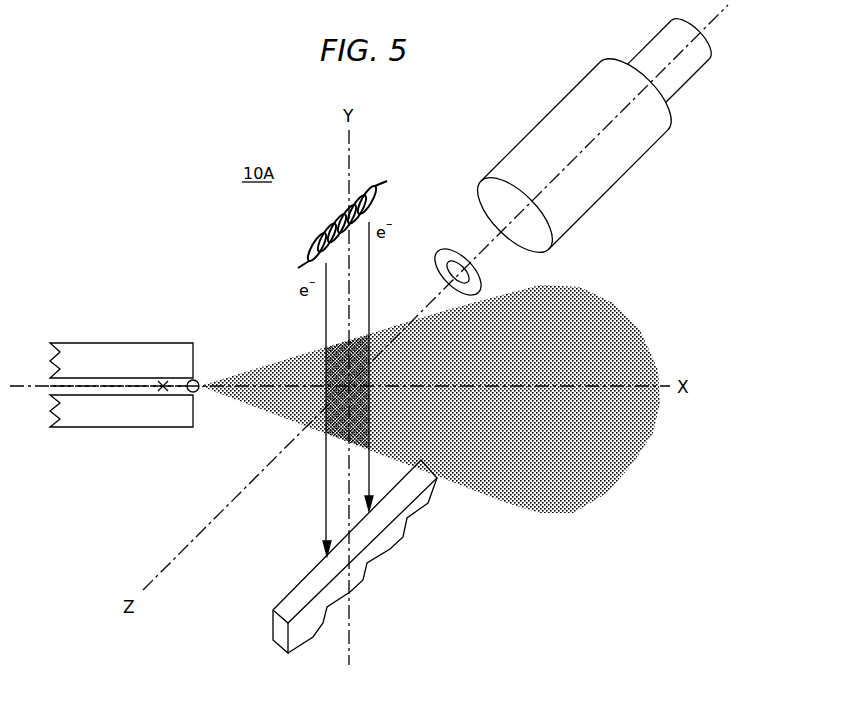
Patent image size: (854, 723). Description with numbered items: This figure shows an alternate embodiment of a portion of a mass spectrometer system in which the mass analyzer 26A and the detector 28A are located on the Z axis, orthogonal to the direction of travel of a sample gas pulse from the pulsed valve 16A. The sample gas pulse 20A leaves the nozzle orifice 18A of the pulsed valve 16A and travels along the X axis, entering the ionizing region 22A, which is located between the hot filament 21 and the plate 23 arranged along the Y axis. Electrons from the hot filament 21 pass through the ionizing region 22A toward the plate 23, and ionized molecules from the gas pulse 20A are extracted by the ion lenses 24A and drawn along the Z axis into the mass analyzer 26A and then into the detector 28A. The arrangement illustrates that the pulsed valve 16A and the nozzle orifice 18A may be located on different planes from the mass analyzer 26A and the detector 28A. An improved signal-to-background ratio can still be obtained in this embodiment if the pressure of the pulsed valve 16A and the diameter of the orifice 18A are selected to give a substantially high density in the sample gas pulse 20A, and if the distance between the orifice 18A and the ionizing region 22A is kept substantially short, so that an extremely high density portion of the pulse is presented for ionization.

The pulsed valve 16A is at (160, 386).
The nozzle orifice 18A is at (197, 381).
The sample gas pulse 20A is at (277, 372).
The hot filament 21 is at (318, 243).
The ionizing region 22A is at (358, 428).
The plate 23 is at (293, 590).
The ion lenses 24A is at (450, 250).
The mass analyzer 26A is at (577, 117).
The detector 28A is at (647, 52).